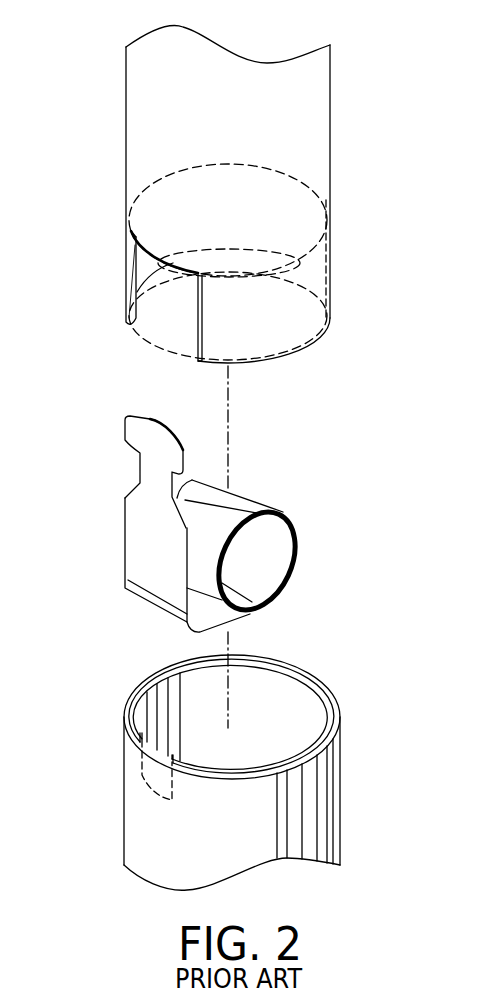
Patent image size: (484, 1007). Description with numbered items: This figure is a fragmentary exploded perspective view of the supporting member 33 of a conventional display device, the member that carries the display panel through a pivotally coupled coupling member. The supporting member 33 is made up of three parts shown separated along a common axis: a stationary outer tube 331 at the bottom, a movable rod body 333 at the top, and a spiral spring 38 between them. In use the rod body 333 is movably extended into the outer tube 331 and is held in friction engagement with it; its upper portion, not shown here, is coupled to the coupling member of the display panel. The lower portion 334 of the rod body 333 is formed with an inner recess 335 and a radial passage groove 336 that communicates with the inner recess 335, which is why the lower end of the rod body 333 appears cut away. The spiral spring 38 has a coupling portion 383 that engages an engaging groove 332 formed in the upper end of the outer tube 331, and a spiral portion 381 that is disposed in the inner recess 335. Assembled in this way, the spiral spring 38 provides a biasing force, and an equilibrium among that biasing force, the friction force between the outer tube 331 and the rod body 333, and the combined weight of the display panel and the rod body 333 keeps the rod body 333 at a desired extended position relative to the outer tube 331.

The supporting member 33 is at (383, 450).
The spiral spring 38 is at (255, 488).
The spiral portion 381 is at (273, 550).
The coupling portion 383 is at (157, 450).
The stationary outer tube 331 is at (323, 783).
The engaging groove 332 is at (155, 770).
The movable rod body 333 is at (332, 170).
The lower portion 334 is at (333, 269).
The inner recess 335 is at (330, 320).
The radial passage groove 336 is at (170, 318).